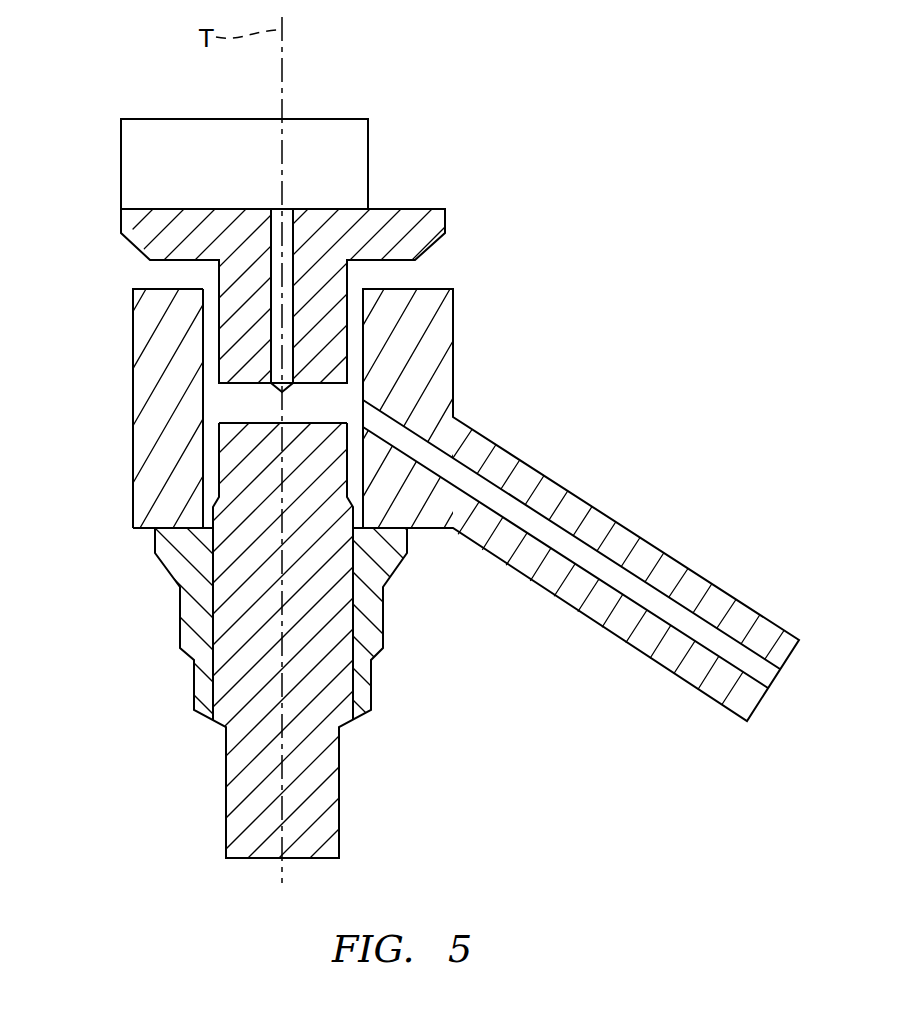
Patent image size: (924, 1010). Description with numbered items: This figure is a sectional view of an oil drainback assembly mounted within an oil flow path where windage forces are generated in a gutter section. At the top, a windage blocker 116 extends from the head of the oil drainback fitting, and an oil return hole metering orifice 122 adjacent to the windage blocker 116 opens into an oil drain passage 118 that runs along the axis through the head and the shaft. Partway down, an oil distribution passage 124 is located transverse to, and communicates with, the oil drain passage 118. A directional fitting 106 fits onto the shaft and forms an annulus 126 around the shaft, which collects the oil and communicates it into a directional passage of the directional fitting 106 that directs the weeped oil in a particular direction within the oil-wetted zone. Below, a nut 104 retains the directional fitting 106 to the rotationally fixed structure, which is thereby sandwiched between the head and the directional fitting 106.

The nut 104 is at (198, 633).
The directional fitting 106 is at (168, 463).
The windage blocker 116 is at (325, 143).
The oil drain passage 118 is at (275, 320).
The oil return hole metering orifice 122 is at (289, 227).
The oil distribution passage 124 is at (237, 403).
The annulus 126 is at (212, 480).